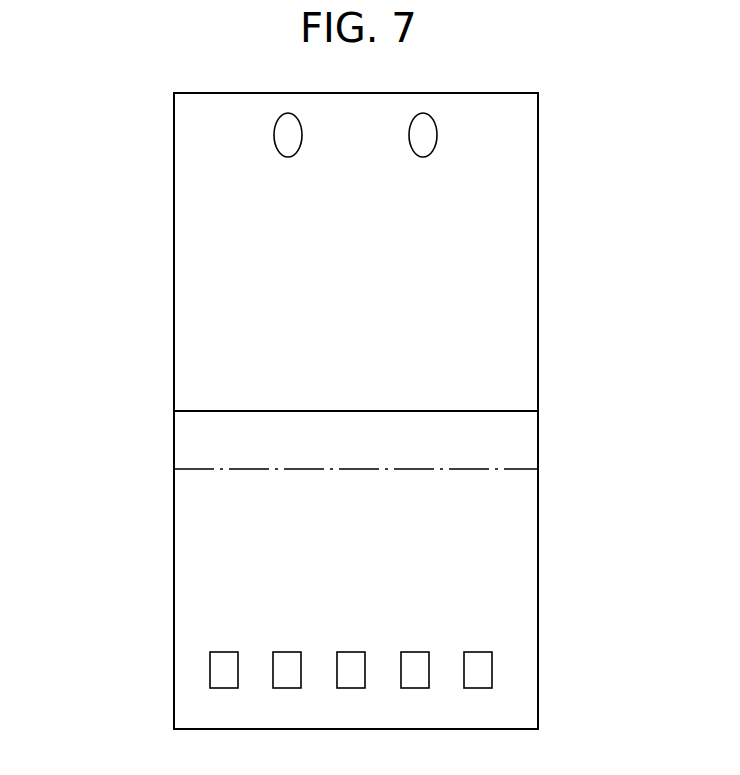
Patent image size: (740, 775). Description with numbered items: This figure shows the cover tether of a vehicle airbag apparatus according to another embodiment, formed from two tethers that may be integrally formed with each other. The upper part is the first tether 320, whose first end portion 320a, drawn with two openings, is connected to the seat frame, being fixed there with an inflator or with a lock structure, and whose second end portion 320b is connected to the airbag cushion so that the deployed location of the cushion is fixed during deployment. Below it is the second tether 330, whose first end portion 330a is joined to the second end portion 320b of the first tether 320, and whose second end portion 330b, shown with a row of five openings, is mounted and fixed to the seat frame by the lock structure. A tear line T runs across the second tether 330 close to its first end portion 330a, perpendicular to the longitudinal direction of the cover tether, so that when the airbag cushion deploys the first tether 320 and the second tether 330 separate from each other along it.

The first tether 320 is at (512, 264).
The first end portion of the first tether 320a is at (512, 154).
The second end portion of the first tether 320b is at (512, 369).
The second tether 330 is at (512, 566).
The first end portion of the second tether 330a is at (190, 440).
The second end portion of the second tether 330b is at (190, 698).
The tear line T is at (512, 444).